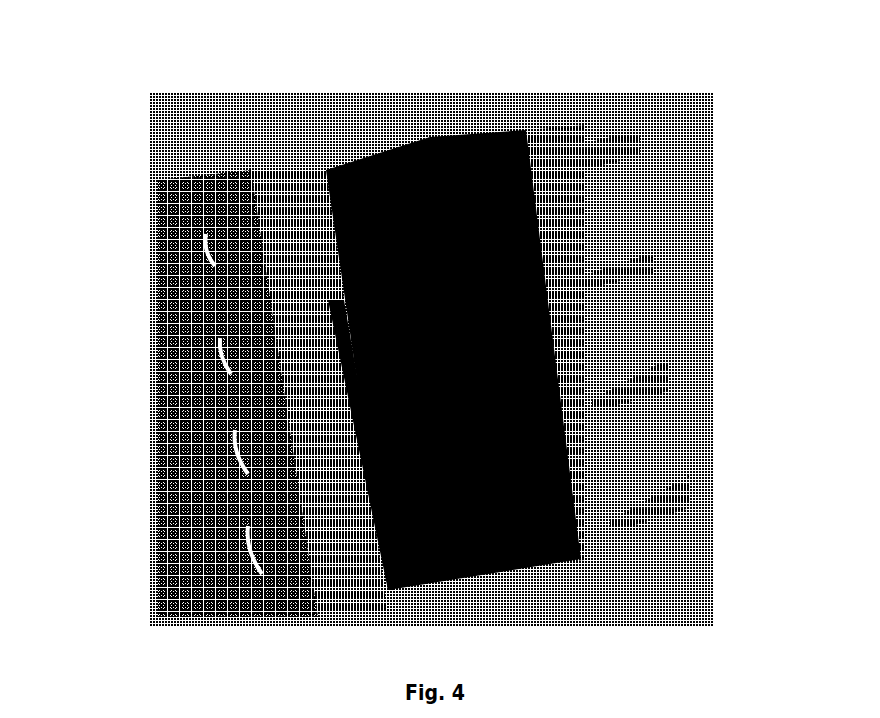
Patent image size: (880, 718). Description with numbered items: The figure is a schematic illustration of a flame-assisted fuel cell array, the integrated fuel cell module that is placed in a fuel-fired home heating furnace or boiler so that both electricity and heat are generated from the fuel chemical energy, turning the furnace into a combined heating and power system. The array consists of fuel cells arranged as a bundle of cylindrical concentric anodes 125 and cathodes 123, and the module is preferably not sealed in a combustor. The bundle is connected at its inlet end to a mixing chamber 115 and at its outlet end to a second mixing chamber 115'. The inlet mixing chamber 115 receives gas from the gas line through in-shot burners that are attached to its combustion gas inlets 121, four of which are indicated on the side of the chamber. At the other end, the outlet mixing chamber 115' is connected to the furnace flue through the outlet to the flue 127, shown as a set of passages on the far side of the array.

The mixing chamber 115 is at (226, 341).
The mixing chamber 115' is at (530, 77).
The combustion gas inlets 121 is at (236, 523).
The cathodes 123 is at (396, 180).
The anodes 125 is at (380, 511).
The outlet to the flue 127 is at (690, 483).